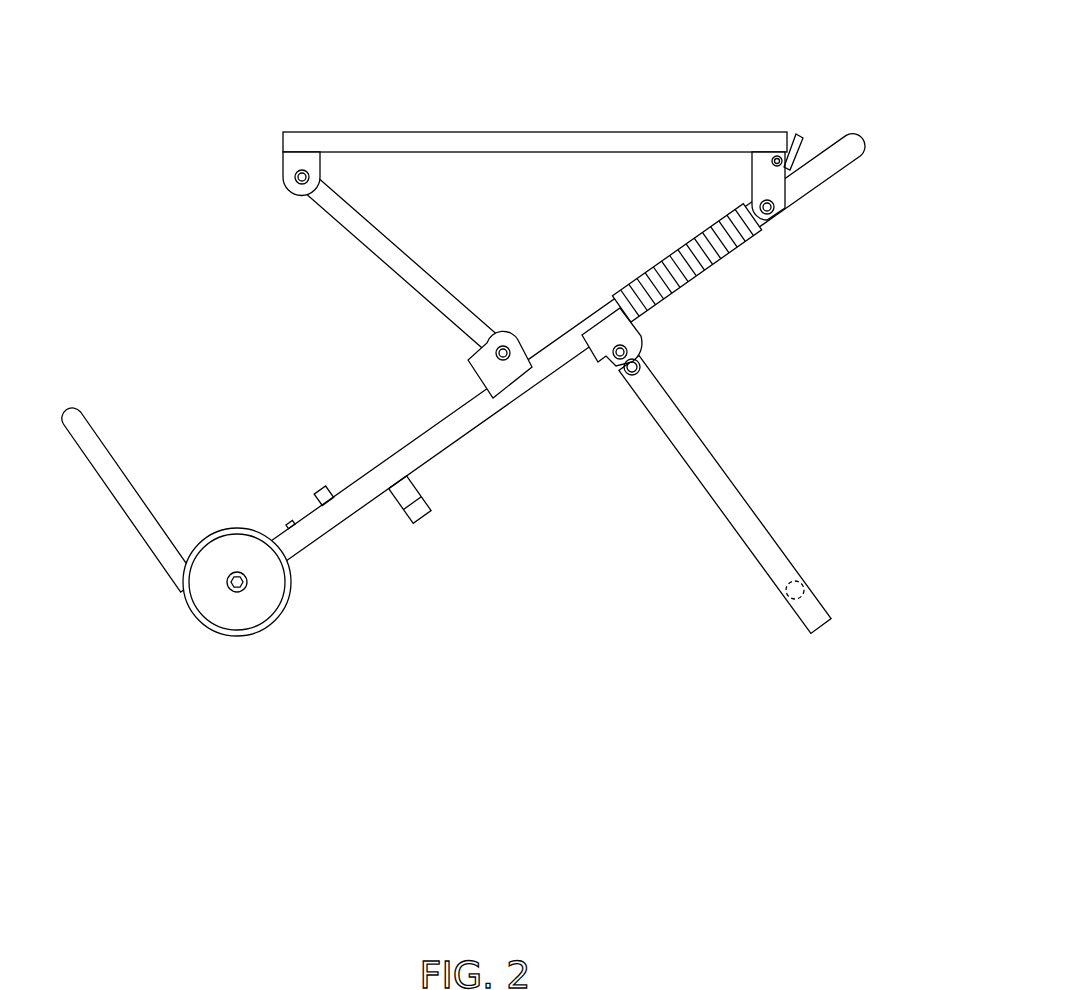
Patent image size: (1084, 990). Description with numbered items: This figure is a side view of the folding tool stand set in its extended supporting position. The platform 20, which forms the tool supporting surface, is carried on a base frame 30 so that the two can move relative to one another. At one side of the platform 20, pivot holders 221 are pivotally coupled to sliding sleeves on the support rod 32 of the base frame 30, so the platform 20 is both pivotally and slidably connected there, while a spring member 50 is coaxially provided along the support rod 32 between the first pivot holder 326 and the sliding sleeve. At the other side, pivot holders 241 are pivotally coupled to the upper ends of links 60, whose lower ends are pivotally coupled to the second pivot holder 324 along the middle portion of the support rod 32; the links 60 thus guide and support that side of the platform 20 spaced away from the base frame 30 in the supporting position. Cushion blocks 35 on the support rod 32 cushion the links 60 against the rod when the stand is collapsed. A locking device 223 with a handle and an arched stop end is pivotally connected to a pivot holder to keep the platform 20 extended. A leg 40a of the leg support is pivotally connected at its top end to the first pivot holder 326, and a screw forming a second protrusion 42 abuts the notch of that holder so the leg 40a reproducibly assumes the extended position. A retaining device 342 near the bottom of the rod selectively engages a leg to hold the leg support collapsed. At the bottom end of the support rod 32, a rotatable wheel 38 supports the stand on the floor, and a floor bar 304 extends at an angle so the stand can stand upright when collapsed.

The platform 20 is at (313, 133).
The pivot holders 221 is at (757, 181).
The locking device 223 is at (795, 158).
The pivot holders 241 is at (292, 160).
The links 60 is at (385, 253).
The spring members 50 is at (713, 267).
The base frame 30 is at (829, 180).
The second pivot holder 324 is at (482, 372).
The first pivot holder 326 is at (617, 335).
The floor bar 304 is at (103, 462).
The cushion blocks 35 is at (316, 483).
The support rod 32 is at (442, 438).
The second protrusion 42 is at (628, 376).
The leg 40a is at (745, 522).
The retaining device 342 is at (408, 511).
The wheel 38 is at (250, 598).